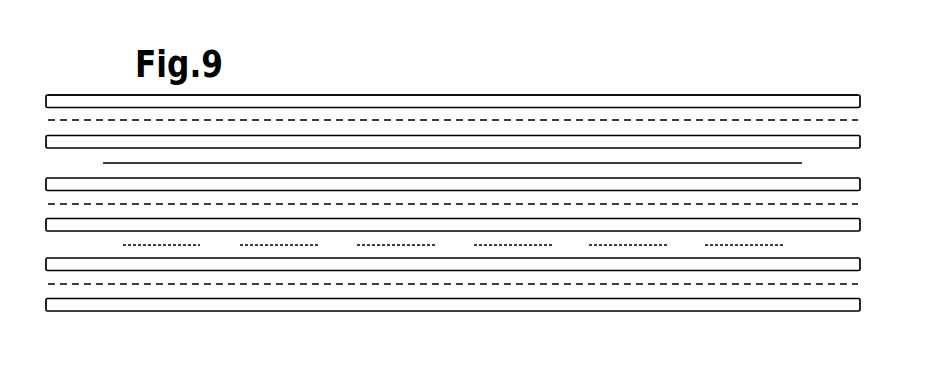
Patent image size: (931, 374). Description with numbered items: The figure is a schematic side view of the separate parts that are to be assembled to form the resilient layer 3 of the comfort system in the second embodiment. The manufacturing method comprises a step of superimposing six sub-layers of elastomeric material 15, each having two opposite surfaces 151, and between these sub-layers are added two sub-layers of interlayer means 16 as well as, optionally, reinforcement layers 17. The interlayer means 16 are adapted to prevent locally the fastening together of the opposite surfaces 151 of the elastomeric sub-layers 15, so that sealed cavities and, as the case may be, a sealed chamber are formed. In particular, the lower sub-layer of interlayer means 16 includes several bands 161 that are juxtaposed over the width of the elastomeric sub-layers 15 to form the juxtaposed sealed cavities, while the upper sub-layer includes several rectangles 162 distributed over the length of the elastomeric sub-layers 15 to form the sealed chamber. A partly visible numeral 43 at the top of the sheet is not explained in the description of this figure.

The resilient layer 3 is at (453, 177).
The sub-layer of elastomeric material 15 is at (88, 183).
The opposite surface 151 is at (535, 94).
The reinforcement layer 17 is at (617, 120).
The rectangle 162 is at (213, 165).
The band 161 is at (378, 246).
The interlayer means 16 is at (453, 298).
The component 43 is at (430, 1).